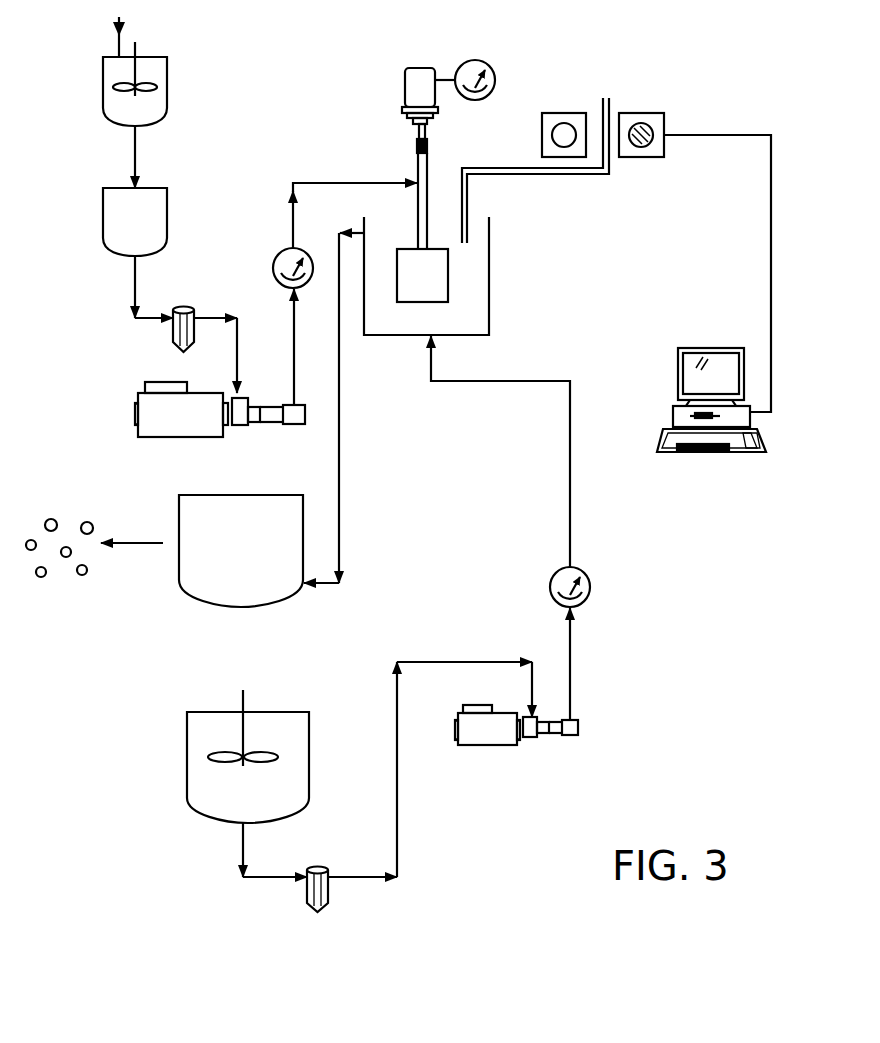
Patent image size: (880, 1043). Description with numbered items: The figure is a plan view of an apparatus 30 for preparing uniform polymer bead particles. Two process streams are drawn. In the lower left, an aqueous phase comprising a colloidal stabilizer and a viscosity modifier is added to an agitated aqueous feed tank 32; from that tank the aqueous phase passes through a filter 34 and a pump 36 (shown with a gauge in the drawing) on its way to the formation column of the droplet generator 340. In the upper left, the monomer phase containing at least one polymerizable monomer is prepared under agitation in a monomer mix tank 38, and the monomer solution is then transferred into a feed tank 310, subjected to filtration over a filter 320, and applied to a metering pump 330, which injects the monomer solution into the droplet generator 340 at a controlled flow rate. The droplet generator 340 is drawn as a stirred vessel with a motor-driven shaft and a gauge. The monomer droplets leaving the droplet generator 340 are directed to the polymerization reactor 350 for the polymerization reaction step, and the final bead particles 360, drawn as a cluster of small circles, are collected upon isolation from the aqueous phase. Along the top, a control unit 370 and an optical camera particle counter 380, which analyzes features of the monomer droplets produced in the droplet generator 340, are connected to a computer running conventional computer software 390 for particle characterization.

The apparatus 30 is at (688, 666).
The aqueous feed tank 32 is at (232, 756).
The filter 34 is at (318, 877).
The pump 36 is at (516, 740).
The monomer mix tank 38 is at (153, 72).
The feed tank 310 is at (158, 222).
The filter 320 is at (188, 317).
The metering pump 330 is at (220, 422).
The droplet generator 340 is at (486, 197).
The polymerization reactor 350 is at (241, 566).
The bead particles 360 is at (59, 563).
The controller 370 is at (564, 122).
The optical camera particle counter 380 is at (642, 122).
The computer software 390 is at (711, 415).